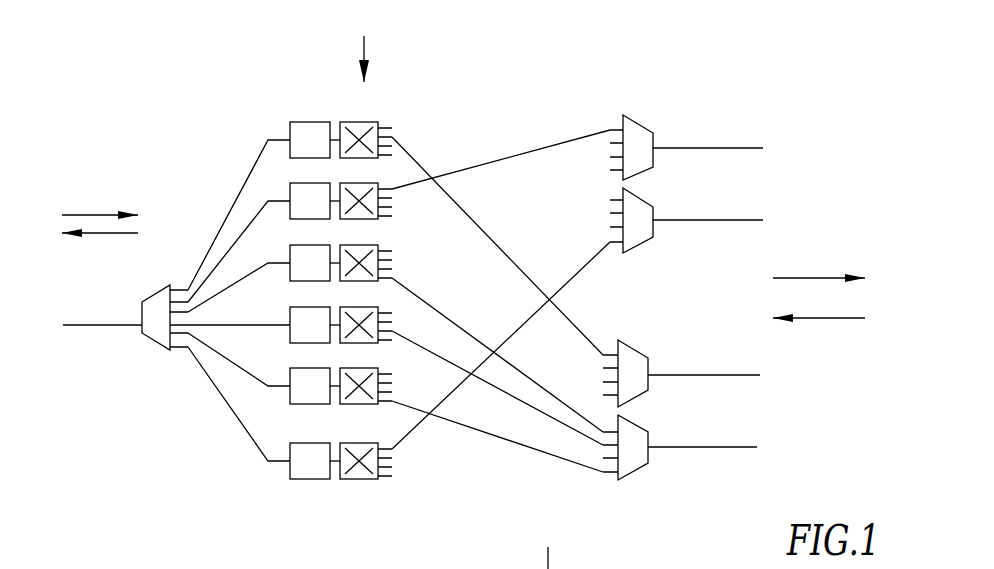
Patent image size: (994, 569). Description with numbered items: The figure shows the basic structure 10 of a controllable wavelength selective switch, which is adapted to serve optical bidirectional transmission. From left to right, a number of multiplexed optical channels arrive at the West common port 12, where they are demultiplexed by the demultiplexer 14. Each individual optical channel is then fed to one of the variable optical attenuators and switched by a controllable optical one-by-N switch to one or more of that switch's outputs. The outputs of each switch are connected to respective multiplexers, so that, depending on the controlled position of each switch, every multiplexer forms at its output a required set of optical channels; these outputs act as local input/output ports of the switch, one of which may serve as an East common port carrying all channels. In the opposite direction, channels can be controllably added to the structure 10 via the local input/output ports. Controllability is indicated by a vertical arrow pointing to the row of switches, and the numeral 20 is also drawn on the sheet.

The structure 10 is at (207, 109).
The West common port 12 is at (93, 322).
The DMUX 14 is at (157, 290).
The controller 20 is at (169, 560).